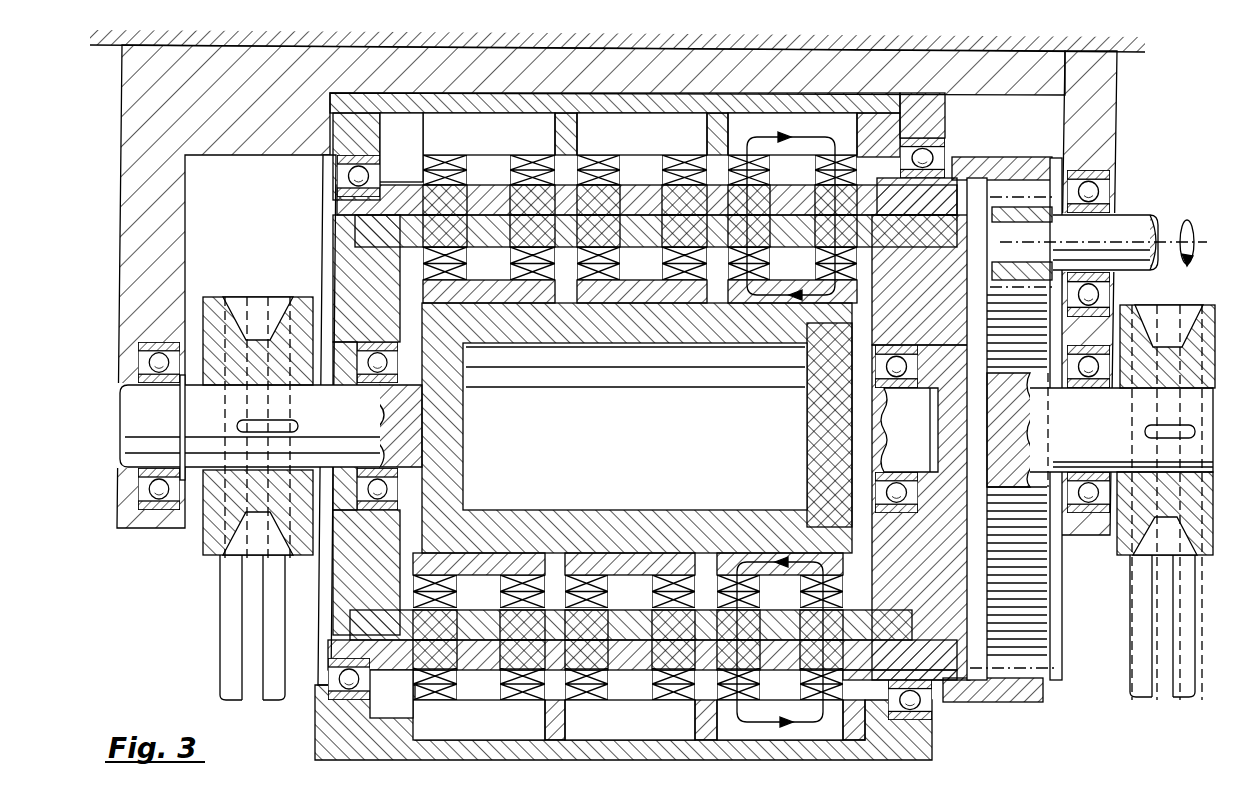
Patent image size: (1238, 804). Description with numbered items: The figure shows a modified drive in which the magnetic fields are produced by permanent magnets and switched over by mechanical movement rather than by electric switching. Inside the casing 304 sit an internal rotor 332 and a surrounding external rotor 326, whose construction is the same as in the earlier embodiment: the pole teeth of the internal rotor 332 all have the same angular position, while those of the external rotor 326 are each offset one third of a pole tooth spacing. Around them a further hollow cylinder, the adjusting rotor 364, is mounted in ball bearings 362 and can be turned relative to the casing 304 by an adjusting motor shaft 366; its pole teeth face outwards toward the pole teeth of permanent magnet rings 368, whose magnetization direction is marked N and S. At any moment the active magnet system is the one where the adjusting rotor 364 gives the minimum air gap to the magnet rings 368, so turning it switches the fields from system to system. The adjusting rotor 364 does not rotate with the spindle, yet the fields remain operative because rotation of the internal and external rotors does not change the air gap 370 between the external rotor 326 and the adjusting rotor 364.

The casing 304 is at (191, 175).
The external rotor 326 is at (337, 282).
The internal rotor 332 is at (643, 350).
The ball bearings 362 is at (340, 174).
The adjusting rotor 364 is at (335, 205).
The adjusting motor shaft 366 is at (1140, 247).
The permanent magnet rings 368 is at (488, 127).
The air gap 370 is at (336, 218).